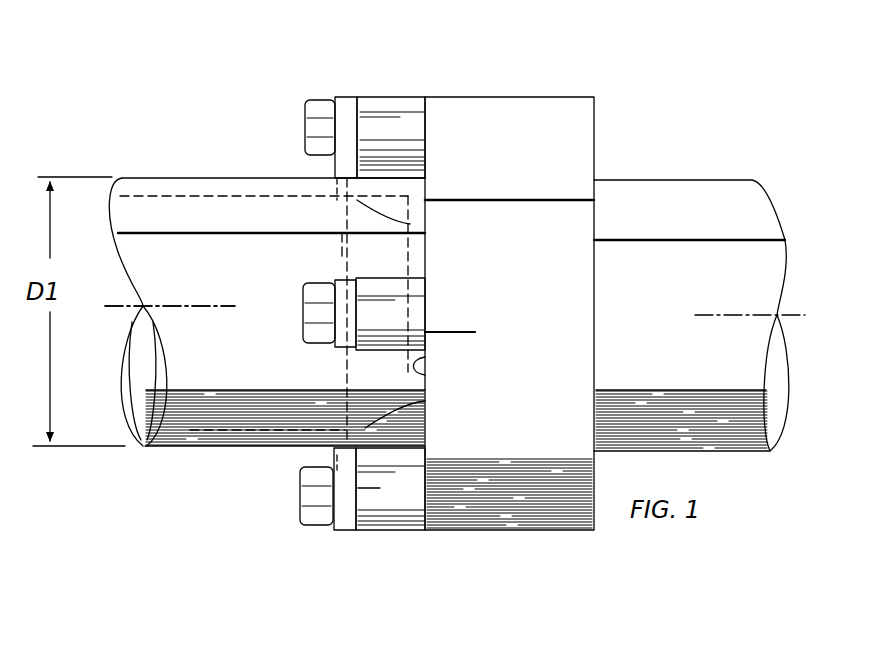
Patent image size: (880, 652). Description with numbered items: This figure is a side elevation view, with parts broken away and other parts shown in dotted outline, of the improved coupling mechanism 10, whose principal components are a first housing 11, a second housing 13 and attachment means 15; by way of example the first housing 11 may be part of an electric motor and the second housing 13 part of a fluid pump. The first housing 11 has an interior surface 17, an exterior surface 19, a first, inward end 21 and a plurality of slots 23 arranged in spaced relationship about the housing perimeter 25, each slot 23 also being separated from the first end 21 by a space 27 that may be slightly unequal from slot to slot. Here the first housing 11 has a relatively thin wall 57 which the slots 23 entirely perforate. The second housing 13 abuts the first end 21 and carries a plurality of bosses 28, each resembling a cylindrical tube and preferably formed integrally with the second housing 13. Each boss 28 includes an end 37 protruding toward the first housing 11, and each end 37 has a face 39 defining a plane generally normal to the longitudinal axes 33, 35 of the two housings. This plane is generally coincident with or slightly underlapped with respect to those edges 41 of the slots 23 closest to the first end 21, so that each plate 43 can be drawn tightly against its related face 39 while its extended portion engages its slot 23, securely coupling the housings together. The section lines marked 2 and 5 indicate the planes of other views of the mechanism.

The coupling mechanism 10 is at (590, 580).
The first housing 11 is at (212, 176).
The second housing 13 is at (514, 97).
The attachment means 15 is at (305, 540).
The interior surface 17 is at (140, 413).
The exterior surface 19 is at (212, 448).
The first, inward end 21 is at (420, 360).
The slots 23 is at (338, 198).
The housing perimeter 25 is at (342, 258).
The spaces 27 is at (398, 178).
The bosses 28 is at (412, 104).
The longitudinal axis of the first housing 33 is at (118, 306).
The longitudinal axis of the second housing 35 is at (777, 316).
The boss end 37 is at (352, 94).
The face 39 is at (358, 488).
The slot edges 41 is at (410, 224).
The plates 43 is at (335, 170).
The thin wall 57 is at (160, 193).
The section line 2- 2 is at (357, 3).
The section line 5- 5 is at (425, 45).